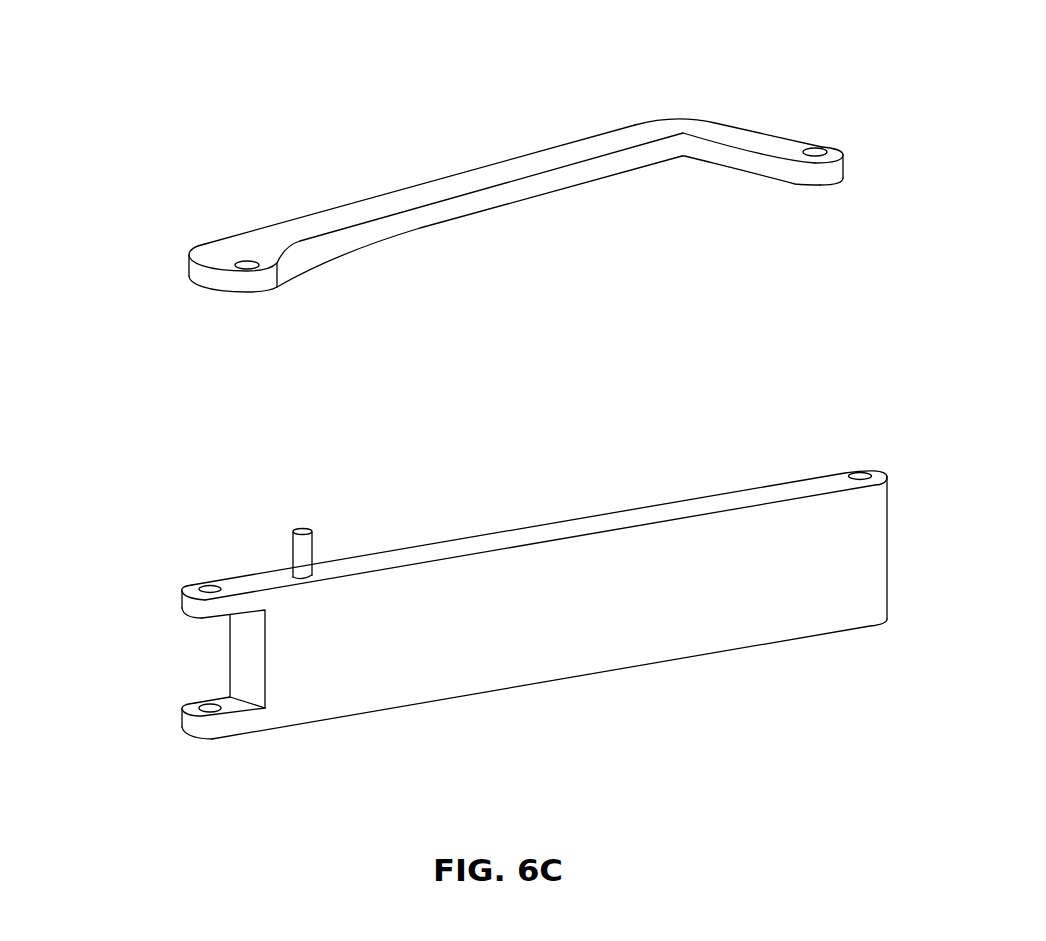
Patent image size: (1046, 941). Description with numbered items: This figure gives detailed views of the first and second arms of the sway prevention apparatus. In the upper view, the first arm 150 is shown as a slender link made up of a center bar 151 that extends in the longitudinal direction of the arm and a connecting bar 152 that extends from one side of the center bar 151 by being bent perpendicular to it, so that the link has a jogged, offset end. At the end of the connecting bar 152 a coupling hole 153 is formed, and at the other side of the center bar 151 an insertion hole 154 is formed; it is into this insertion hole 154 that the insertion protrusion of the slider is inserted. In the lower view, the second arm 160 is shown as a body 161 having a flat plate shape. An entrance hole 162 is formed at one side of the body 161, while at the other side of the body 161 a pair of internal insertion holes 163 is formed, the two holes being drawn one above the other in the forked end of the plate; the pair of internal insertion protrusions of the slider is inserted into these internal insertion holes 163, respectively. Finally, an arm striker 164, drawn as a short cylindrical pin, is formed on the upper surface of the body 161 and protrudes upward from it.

The first arm 150 is at (559, 156).
The center bar 151 is at (518, 170).
The connecting bar 152 is at (737, 134).
The coupling hole 153 is at (815, 152).
The insertion hole 154 is at (247, 263).
The second arm 160 is at (477, 585).
The body 161 is at (564, 654).
The entrance hole 162 is at (862, 474).
The internal insertion holes 163 is at (205, 590).
The arm striker 164 is at (298, 538).